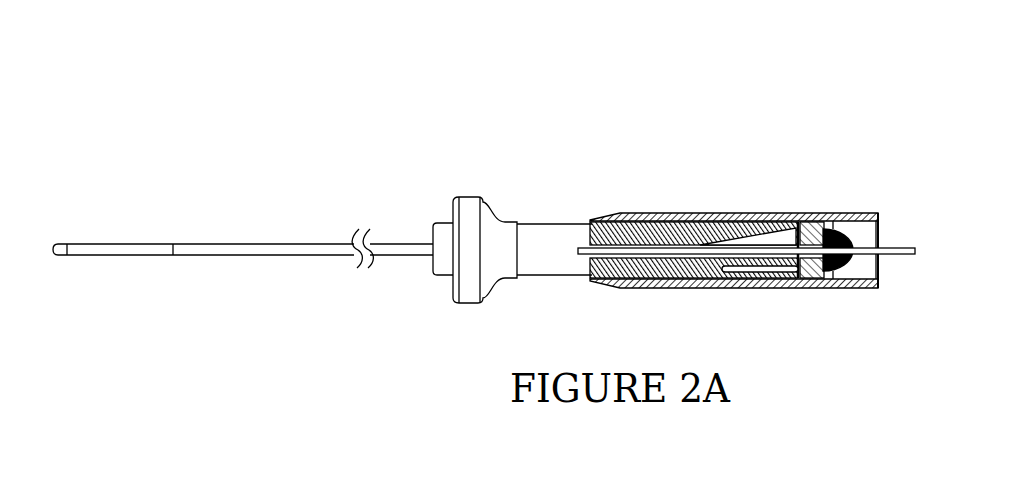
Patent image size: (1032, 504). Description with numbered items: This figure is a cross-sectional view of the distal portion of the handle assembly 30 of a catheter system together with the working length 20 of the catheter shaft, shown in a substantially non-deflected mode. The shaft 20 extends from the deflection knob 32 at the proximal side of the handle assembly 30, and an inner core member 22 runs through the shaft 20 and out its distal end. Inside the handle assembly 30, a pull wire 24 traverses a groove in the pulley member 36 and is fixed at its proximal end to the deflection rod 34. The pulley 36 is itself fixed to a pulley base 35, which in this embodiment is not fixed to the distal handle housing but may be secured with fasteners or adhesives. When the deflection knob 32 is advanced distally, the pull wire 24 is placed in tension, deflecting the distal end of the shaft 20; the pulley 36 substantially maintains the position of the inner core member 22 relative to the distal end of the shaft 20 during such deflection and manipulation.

The working length 20 is at (223, 255).
The inner core member 22 is at (902, 255).
The pull wire 24 is at (776, 244).
The handle assembly 30 is at (655, 215).
The deflection knob 32 is at (468, 197).
The deflection rod 34 is at (553, 223).
The pulley base 35 is at (818, 217).
The pulley member 36 is at (847, 223).